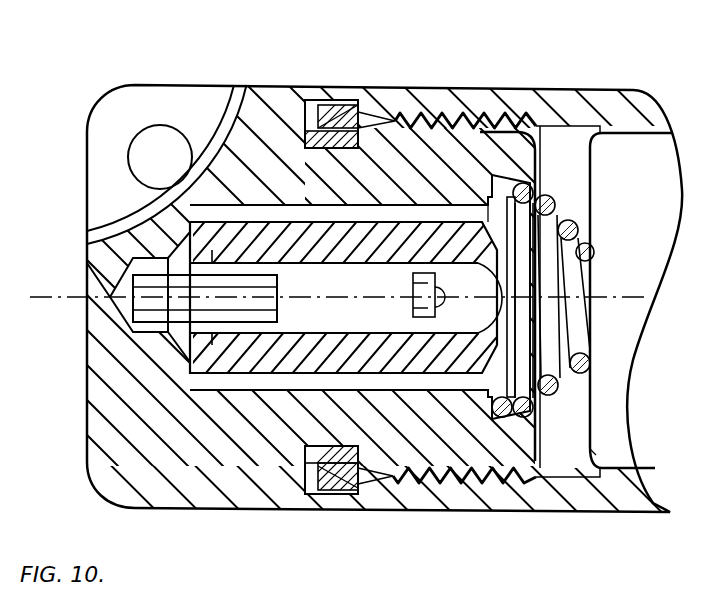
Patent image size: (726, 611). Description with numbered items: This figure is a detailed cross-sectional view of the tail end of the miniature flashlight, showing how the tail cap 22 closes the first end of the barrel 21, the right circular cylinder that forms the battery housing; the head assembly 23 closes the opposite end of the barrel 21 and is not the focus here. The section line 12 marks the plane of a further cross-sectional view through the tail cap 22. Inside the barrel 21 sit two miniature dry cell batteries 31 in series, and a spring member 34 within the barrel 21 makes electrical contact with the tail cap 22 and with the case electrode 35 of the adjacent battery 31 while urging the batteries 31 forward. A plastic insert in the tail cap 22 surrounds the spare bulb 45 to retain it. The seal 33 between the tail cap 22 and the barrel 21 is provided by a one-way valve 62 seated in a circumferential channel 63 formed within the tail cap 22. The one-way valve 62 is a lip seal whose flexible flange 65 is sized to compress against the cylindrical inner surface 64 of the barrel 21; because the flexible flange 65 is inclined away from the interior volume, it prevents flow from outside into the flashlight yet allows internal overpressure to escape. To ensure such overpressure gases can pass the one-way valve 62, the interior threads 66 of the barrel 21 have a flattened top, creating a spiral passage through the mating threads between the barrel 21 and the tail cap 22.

The section line 12- 12 is at (306, 100).
The barrel 21 is at (556, 89).
The tail cap 22 is at (100, 490).
The head assembly 23 is at (158, 126).
The miniature dry cell battery 31 is at (596, 455).
The sealing element 33 is at (366, 110).
The spring member 34 is at (547, 396).
The case electrode 35 is at (594, 189).
The spare bulb 45 is at (500, 295).
The one-way valve 62 is at (346, 107).
The circumferential channel 63 is at (304, 120).
The cylindrical inner surface 64 is at (375, 488).
The flexible flange 65 is at (329, 494).
The interior threads 66 is at (449, 488).